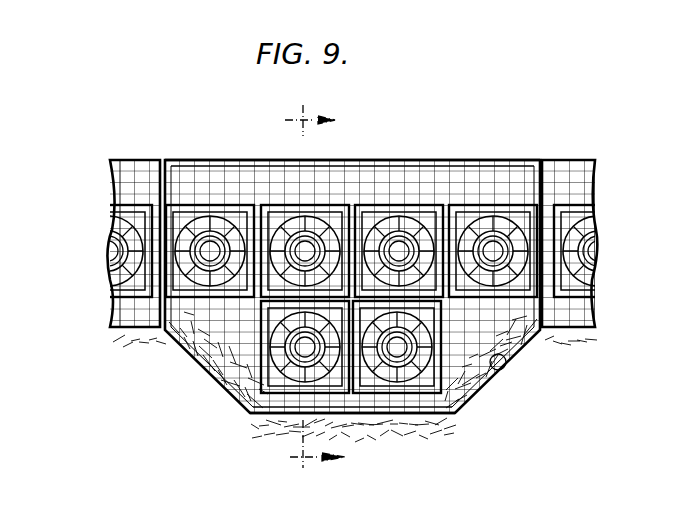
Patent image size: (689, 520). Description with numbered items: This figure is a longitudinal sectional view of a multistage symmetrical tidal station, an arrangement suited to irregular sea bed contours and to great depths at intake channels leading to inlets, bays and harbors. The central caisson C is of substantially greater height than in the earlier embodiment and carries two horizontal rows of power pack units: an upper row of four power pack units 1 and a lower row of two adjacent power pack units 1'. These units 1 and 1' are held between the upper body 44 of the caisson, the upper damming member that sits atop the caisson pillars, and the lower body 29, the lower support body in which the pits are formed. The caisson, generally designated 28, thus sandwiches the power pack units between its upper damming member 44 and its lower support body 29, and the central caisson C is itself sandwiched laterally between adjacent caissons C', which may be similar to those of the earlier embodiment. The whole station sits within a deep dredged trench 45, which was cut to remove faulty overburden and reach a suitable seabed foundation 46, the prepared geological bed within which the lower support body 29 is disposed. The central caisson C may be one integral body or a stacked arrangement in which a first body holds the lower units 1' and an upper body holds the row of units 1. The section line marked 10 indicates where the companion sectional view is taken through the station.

The central caisson C is at (352, 263).
The adjacent caisson C' is at (353, 217).
The upper damming member 44 is at (410, 160).
The caisson 28 is at (337, 179).
The power pack unit 1 is at (351, 235).
The lower power pack unit 1' is at (352, 347).
The section line 10- 10 is at (329, 287).
The dredged trench 45 is at (200, 392).
The seabed foundation 46 is at (272, 438).
The lower support body 29 is at (410, 416).